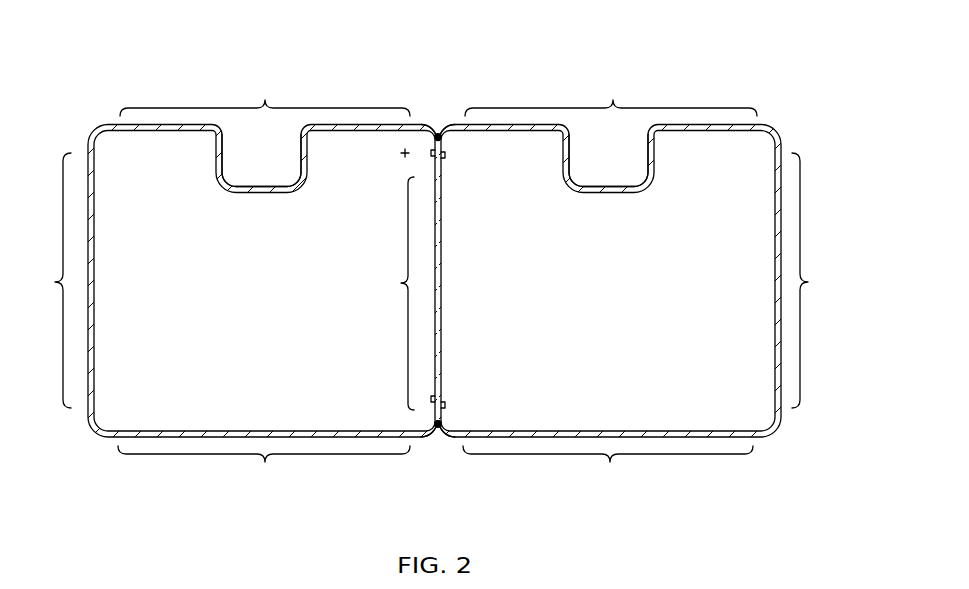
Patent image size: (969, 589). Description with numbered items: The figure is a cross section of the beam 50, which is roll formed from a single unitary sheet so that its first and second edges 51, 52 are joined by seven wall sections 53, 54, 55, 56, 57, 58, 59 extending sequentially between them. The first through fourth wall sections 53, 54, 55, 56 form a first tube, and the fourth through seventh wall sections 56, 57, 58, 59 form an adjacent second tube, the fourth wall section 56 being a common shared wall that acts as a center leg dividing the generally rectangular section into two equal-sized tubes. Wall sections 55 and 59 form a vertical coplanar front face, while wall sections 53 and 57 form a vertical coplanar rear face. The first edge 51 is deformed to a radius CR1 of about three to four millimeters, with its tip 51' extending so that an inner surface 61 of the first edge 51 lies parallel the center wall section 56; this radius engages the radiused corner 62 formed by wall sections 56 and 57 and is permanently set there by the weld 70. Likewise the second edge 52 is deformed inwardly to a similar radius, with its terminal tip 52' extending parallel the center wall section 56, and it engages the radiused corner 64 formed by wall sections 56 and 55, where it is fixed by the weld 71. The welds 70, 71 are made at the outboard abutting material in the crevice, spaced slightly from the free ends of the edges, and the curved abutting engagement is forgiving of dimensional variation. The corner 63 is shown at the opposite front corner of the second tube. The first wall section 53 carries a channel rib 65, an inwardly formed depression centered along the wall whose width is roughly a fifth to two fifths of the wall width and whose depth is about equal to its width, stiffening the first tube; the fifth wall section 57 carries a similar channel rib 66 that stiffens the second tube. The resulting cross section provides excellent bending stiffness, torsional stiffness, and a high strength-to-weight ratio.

The beam 50 is at (168, 88).
The first edge 51 is at (406, 166).
The tip of first edge 51' is at (469, 174).
The second edge 52 is at (471, 387).
The terminal tip of second edge 52' is at (458, 369).
The first wall section 53 is at (265, 93).
The second wall section 54 is at (49, 280).
The third wall section 55 is at (264, 471).
The fourth wall section 56 is at (394, 293).
The fifth wall section 57 is at (611, 93).
The sixth wall section 58 is at (813, 280).
The seventh wall section 59 is at (608, 471).
The inner surface of first edge 61 is at (431, 128).
The radiused corner 62 is at (443, 128).
The right lower corner section 63 is at (447, 440).
The radiused corner 64 is at (432, 440).
The channel rib 65 is at (262, 195).
The channel rib 66 is at (603, 195).
The weld 70 is at (441, 142).
The weld 71 is at (434, 426).
The radius CR1 is at (416, 139).